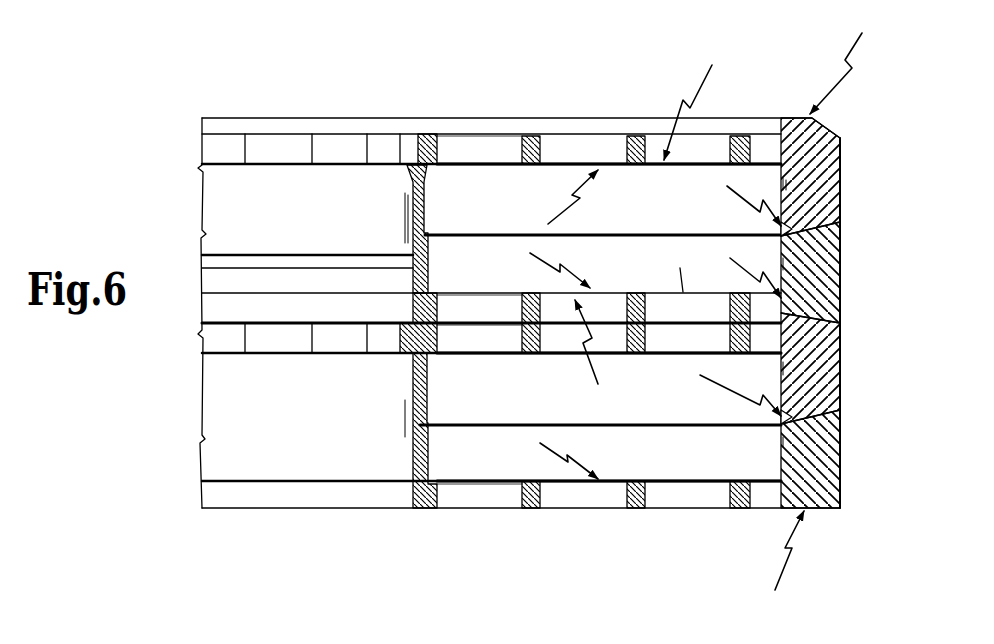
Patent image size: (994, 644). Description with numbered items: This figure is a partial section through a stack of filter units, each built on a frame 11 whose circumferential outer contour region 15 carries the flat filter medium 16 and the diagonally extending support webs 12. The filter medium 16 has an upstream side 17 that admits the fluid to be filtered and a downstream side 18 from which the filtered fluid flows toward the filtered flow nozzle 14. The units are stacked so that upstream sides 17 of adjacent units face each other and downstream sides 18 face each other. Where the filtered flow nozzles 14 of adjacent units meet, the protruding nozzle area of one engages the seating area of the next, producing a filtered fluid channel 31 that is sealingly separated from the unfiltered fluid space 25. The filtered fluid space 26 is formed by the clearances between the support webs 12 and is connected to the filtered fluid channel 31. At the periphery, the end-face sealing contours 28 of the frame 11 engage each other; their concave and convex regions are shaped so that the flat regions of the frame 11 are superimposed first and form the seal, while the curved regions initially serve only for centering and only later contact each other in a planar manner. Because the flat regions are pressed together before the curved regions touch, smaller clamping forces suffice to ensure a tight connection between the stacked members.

The frame 11 is at (843, 170).
The support webs 12 is at (531, 136).
The filtered flow nozzle 14 is at (412, 170).
The outer contour region 15 is at (845, 151).
The filter medium 16 is at (583, 160).
The upstream side 17 is at (552, 324).
The downstream side 18 is at (651, 223).
The unfiltered fluid space 25 is at (514, 190).
The filtered fluid space 26 is at (481, 148).
The sealing contours 28 is at (776, 311).
The filtered fluid channel 31 is at (296, 178).